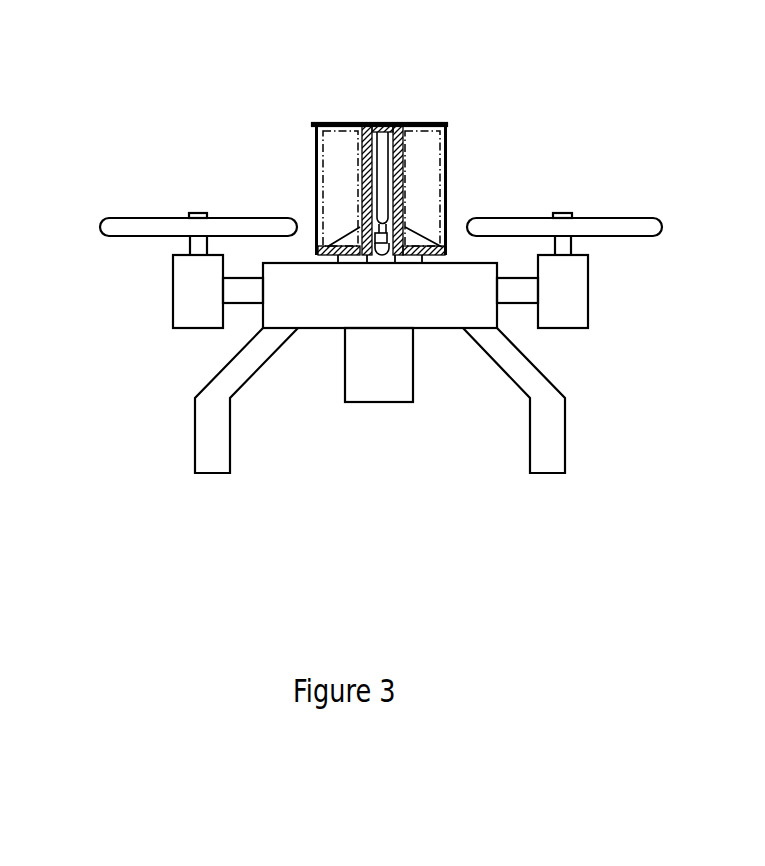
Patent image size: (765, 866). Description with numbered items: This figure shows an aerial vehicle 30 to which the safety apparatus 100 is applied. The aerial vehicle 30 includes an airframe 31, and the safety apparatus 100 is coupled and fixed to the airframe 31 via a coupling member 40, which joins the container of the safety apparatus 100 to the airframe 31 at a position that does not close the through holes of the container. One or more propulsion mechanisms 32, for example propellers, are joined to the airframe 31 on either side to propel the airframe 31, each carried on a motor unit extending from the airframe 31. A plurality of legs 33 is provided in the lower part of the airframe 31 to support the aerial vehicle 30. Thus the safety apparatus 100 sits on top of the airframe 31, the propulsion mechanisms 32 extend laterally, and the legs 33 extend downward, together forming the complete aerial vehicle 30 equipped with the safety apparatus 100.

The safety apparatus 100 is at (407, 113).
The aerial vehicle 30 is at (378, 422).
The airframe 31 is at (332, 313).
The propulsion mechanism 32 is at (130, 229).
The leg 33 is at (218, 457).
The coupling member 40 is at (410, 258).